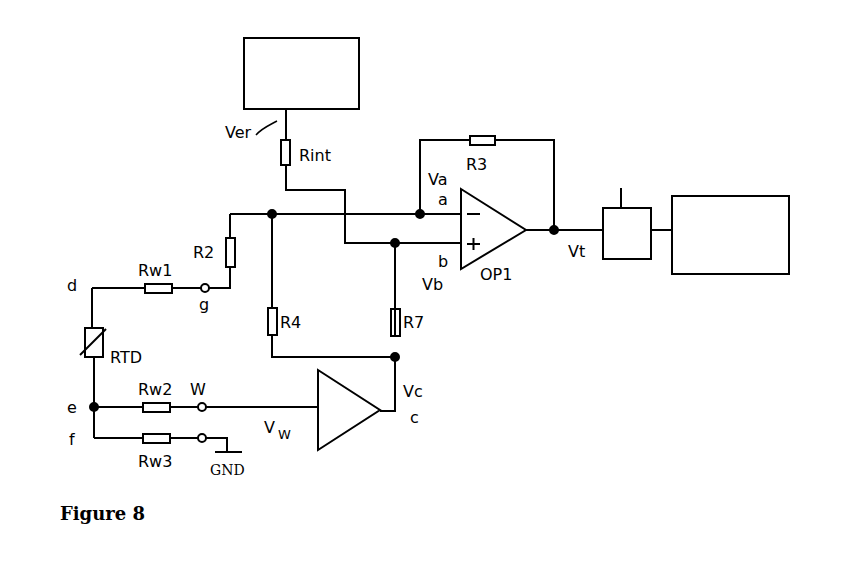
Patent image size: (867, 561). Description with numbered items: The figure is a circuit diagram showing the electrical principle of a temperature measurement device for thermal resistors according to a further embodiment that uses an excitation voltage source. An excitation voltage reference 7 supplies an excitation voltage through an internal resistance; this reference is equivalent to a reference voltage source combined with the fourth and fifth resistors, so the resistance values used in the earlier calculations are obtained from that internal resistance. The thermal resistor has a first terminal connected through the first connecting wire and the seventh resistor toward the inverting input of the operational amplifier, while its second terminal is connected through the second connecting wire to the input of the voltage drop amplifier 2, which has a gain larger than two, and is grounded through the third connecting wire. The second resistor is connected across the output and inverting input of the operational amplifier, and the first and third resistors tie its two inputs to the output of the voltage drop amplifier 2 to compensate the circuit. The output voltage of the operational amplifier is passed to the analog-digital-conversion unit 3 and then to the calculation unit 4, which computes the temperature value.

The excitation voltage reference 7 is at (368, 79).
The analog-digital-conversion unit 3 is at (623, 259).
The calculation unit 4 is at (718, 274).
The voltage drop amplifier 2 is at (360, 423).